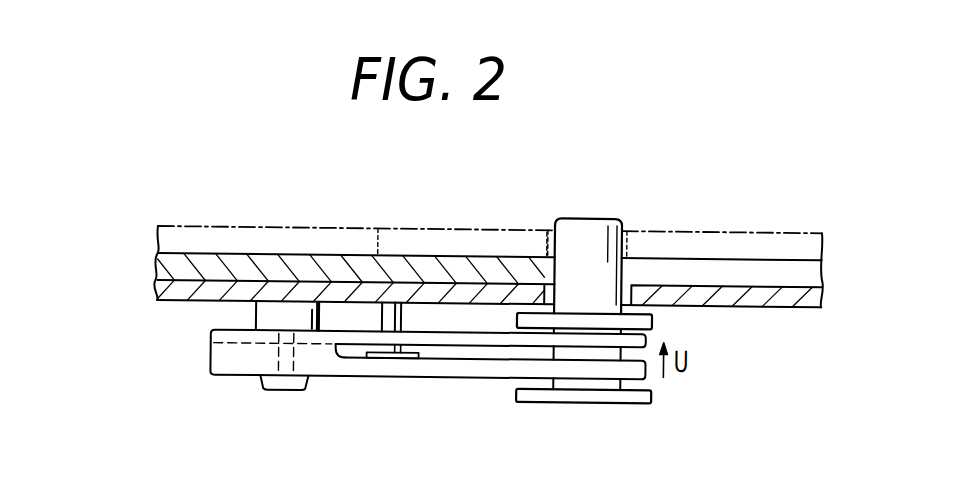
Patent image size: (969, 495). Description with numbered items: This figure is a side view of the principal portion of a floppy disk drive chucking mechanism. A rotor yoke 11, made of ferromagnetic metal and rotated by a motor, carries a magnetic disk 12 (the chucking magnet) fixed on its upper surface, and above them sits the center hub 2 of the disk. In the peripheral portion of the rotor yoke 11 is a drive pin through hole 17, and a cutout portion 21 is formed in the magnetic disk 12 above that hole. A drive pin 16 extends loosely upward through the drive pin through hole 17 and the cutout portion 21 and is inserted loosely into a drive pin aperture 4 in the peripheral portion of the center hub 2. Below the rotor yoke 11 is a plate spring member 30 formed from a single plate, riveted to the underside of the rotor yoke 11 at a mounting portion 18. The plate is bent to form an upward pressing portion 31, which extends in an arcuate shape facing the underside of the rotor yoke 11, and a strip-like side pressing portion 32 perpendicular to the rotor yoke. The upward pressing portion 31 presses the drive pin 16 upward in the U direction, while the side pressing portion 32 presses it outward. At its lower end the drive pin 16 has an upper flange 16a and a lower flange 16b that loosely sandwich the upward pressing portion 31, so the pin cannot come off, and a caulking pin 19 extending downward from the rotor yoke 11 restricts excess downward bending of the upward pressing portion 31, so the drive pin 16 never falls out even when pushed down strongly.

The center hub 2 is at (168, 238).
The drive pin aperture 4 is at (421, 240).
The rotor yoke 11 is at (160, 292).
The magnetic disk 12 is at (160, 262).
The drive pin 16 is at (585, 225).
The upper flange 16a is at (655, 312).
The lower flange 16b is at (615, 388).
The drive pin through hole 17 is at (553, 291).
The mounting portion 18 is at (288, 389).
The caulking pin 19 is at (392, 354).
The cutout portion 21 is at (702, 261).
The plate spring member 30 is at (190, 323).
The upward pressing portion 31 is at (497, 334).
The side pressing portion 32 is at (440, 362).